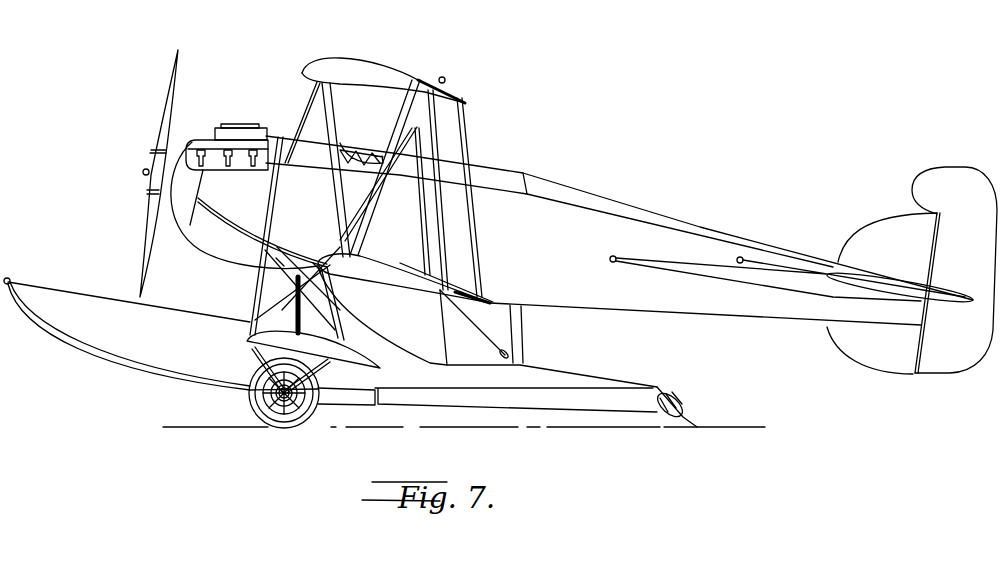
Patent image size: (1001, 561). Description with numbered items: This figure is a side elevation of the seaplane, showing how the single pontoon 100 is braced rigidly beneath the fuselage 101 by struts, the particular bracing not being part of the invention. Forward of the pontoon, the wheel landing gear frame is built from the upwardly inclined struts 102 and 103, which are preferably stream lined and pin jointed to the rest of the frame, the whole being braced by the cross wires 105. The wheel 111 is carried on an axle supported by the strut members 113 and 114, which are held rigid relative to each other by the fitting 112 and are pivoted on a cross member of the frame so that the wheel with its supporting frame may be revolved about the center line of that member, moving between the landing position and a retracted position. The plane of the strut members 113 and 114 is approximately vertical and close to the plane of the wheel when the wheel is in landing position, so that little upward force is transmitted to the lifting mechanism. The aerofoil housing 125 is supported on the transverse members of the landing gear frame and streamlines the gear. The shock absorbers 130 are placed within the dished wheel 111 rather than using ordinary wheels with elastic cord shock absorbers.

The single pontoon 100 is at (161, 334).
The fuselage 101 is at (434, 153).
The upwardly inclined strut 102 is at (268, 258).
The upwardly inclined strut 103 is at (328, 318).
The cross wires 105 is at (317, 267).
The wheel 111 is at (310, 407).
The fitting 112 is at (284, 398).
The strut member 113 is at (257, 357).
The strut member 114 is at (317, 370).
The aerofoil housing 125 is at (313, 349).
The shock absorbers 130 is at (292, 399).